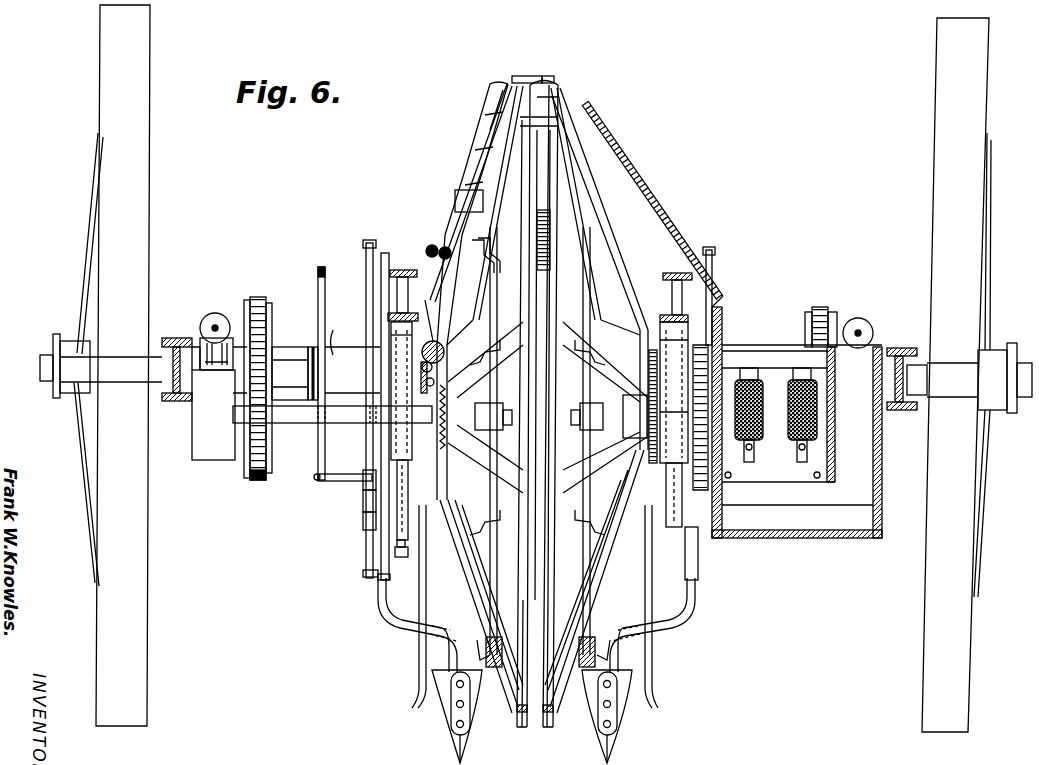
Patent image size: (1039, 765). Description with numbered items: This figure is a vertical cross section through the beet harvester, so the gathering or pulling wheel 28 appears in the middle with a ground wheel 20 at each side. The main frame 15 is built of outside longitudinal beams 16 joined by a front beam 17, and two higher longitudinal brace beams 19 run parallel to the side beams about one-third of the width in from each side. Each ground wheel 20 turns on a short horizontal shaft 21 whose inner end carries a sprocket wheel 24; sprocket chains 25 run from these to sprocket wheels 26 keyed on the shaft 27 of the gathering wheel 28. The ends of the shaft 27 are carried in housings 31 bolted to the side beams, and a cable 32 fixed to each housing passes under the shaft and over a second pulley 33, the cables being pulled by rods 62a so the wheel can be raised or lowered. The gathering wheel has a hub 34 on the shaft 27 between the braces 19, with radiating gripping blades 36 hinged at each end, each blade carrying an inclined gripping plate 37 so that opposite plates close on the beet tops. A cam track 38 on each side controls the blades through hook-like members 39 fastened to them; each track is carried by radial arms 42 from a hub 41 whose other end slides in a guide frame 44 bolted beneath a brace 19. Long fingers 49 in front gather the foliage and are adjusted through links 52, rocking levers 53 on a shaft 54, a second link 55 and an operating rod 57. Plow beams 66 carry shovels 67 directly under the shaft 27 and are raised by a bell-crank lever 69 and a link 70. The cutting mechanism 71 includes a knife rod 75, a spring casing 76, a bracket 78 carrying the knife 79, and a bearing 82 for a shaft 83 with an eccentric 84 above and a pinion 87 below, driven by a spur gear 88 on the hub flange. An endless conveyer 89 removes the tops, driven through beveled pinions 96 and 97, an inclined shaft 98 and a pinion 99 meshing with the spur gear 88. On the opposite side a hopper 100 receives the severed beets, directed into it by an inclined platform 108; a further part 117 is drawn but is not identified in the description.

The main frame 15 is at (311, 347).
The outside longitudinal beams 16 is at (178, 337).
The front beam 17 is at (381, 332).
The longitudinal brace beams 19 is at (398, 270).
The ground wheel 20 is at (542, 368).
The horizontal shaft 21 is at (46, 355).
The sprocket wheel 24 is at (271, 308).
The sprocket chains 25 is at (255, 482).
The sprocket wheels 26 is at (242, 462).
The shaft of the gathering wheel 27 is at (297, 424).
The gathering or pulling wheel 28 is at (569, 421).
The housing 31 is at (219, 403).
The cable 32 is at (218, 372).
The second pulley 33 is at (196, 365).
The hub 34 is at (540, 425).
The gripping blades 36 is at (562, 100).
The gripping plate 37 is at (596, 120).
The cam track 38 is at (612, 238).
The hook-like member 39 is at (586, 292).
The hub 41 is at (440, 420).
The radial arms 42 is at (452, 232).
The frame 44 is at (706, 558).
The long fingers 49 is at (417, 673).
The links 52 is at (442, 588).
The rocking levers 53 is at (364, 526).
The shaft 54 is at (362, 513).
The second link 55 is at (326, 391).
The operating rod 57 is at (318, 269).
The rod 62a is at (215, 313).
The plow beam 66 is at (386, 629).
The shovel 67 is at (448, 719).
The bell-crank lever 69 is at (366, 251).
The second link 70 is at (724, 316).
The cutting mechanism 71 is at (515, 77).
The rod 75 is at (470, 152).
The spring casing 76 is at (486, 124).
The bracket 78 is at (496, 81).
The knife 79 is at (547, 76).
The bearing 82 is at (455, 201).
The shaft 83 is at (438, 253).
The eccentric 84 is at (544, 208).
The pinion 87 is at (422, 348).
The spur gear 88 is at (364, 488).
The endless conveyer 89 is at (613, 141).
The beveled pinion 96 is at (484, 255).
The pinion 97 is at (428, 245).
The inclined shaft 98 is at (428, 300).
The pinion 99 is at (421, 378).
The hopper 100 is at (832, 502).
The inclined platform 108 is at (641, 191).
The spring 117 is at (653, 348).